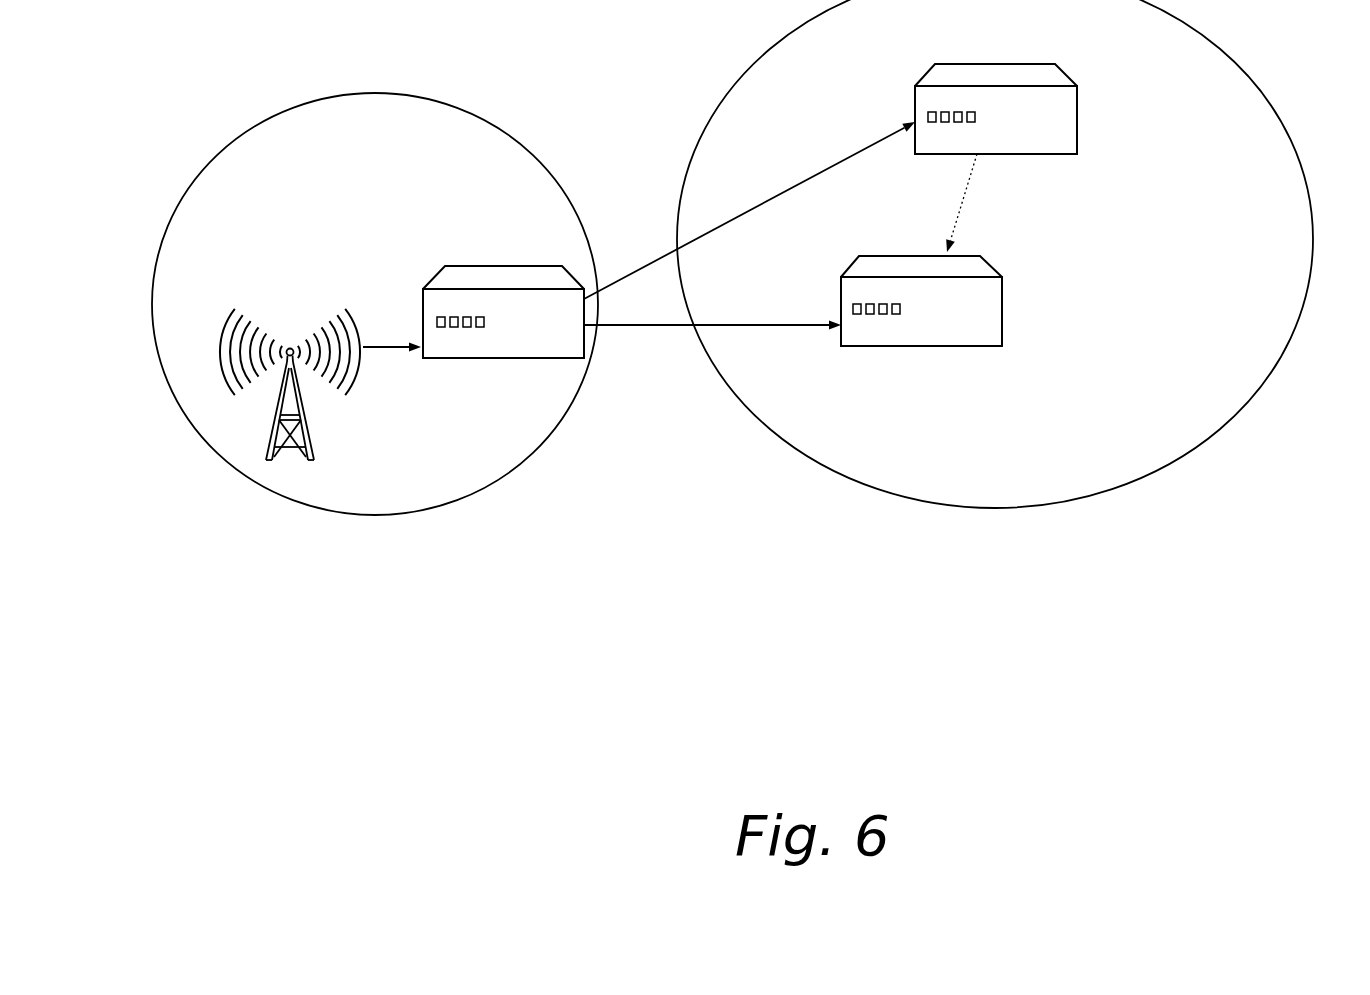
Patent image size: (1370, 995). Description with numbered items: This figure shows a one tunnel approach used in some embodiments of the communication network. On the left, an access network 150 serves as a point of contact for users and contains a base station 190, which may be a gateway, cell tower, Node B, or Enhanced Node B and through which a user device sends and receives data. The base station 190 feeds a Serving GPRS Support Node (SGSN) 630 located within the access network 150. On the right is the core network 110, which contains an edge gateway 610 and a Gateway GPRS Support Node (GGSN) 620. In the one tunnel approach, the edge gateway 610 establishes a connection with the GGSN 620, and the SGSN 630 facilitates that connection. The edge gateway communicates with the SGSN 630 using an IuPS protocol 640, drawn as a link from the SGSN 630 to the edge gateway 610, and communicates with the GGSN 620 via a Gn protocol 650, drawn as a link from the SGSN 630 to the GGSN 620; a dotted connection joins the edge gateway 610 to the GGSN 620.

The core network 110 is at (1112, 489).
The access network 150 is at (402, 180).
The base station 190 is at (233, 435).
The edge gateway 610 is at (996, 109).
The Gateway GPRS Support Node (GGSN) 620 is at (921, 250).
The Serving GPRS Support Node (SGSN) 630 is at (503, 312).
The IuPS protocol 640 is at (749, 210).
The Gn protocol 650 is at (712, 307).